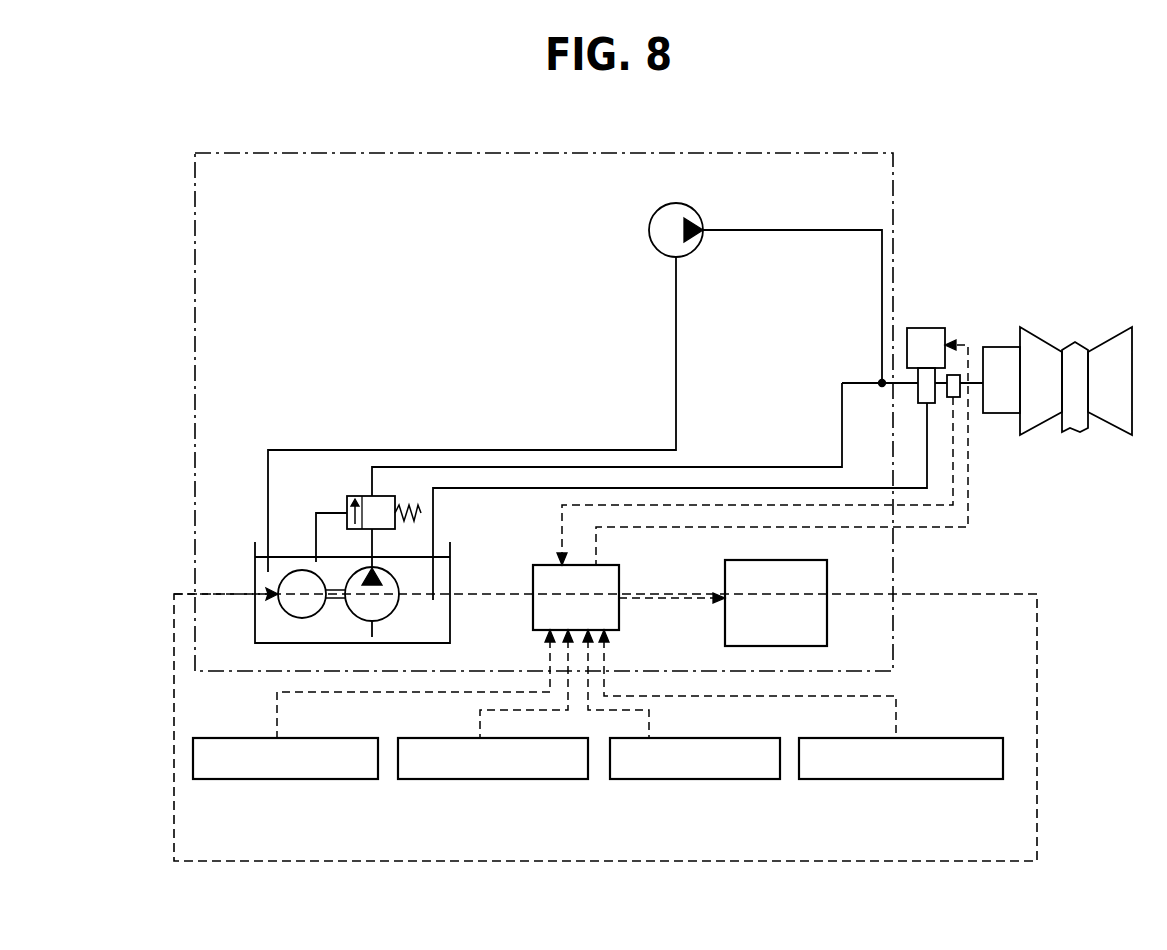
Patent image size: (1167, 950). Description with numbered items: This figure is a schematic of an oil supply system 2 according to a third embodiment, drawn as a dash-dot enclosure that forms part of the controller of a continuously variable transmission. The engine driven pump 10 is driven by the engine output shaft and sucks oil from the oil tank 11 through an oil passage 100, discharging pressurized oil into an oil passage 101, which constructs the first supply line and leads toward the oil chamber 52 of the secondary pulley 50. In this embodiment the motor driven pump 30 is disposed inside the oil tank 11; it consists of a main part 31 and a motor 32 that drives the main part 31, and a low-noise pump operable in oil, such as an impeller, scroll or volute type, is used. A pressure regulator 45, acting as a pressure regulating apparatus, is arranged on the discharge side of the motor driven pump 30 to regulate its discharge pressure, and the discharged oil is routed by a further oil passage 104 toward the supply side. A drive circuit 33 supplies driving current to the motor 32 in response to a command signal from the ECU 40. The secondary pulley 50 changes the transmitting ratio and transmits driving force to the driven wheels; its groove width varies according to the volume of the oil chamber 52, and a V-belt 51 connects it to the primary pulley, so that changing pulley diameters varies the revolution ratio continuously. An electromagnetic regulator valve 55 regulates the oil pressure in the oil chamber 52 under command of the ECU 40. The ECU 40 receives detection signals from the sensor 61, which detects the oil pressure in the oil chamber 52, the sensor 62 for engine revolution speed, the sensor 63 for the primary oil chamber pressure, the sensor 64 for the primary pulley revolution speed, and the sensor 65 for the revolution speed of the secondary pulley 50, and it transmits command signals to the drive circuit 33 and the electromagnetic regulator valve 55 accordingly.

The oil supply system 2 is at (822, 153).
The engine driven pump 10 is at (648, 228).
The oil tank 11 is at (253, 549).
The motor driven pump 30 is at (102, 623).
The main part 31 is at (280, 603).
The motor 32 is at (357, 618).
The drive circuit 33 is at (827, 583).
The ECU 40 is at (533, 565).
The pressure regulator 45 is at (350, 496).
The secondary pulley 50 is at (1035, 340).
The V-belt 51 is at (1075, 343).
The oil chamber 52 is at (993, 347).
The electromagnetic regulator valve 55 is at (917, 328).
The sensor 61 is at (950, 375).
The sensor 62 is at (228, 779).
The sensor 63 is at (435, 779).
The sensor 64 is at (632, 779).
The sensor 65 is at (823, 779).
The oil passage 100 is at (520, 450).
The oil passage 101 is at (787, 230).
The oil passage 104 is at (722, 467).